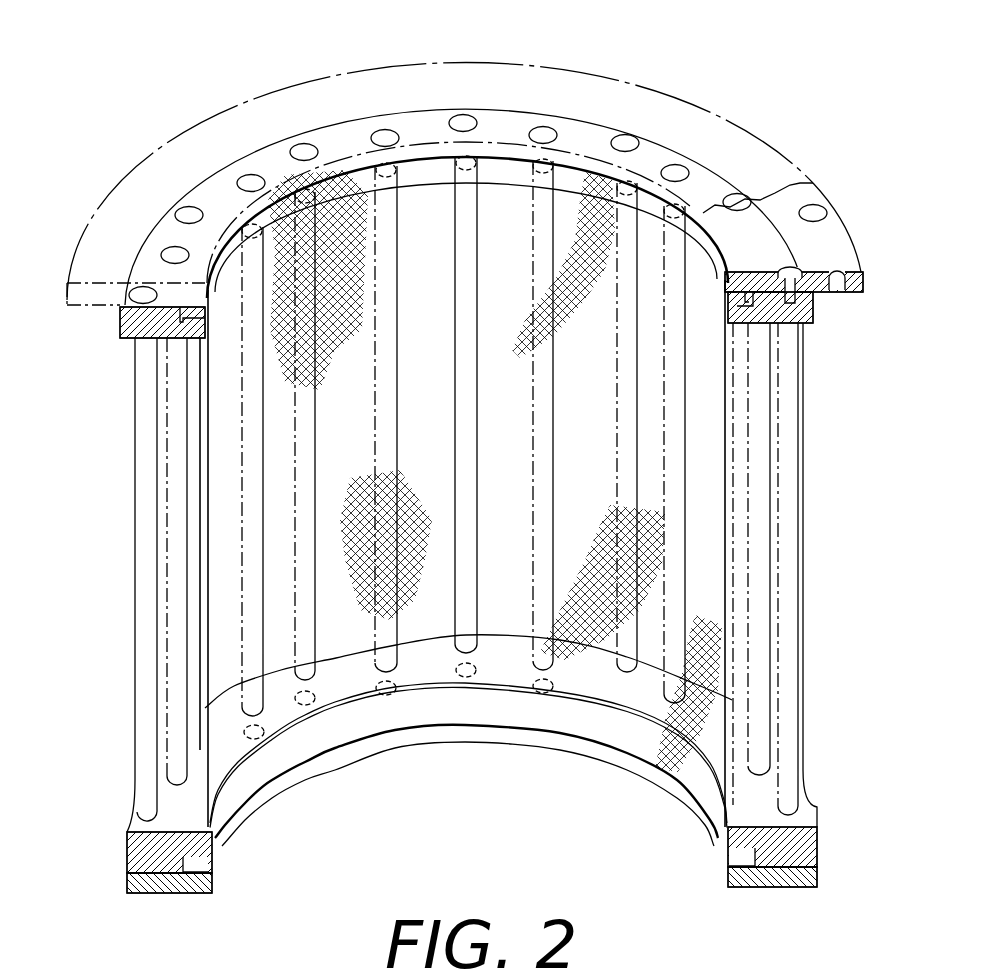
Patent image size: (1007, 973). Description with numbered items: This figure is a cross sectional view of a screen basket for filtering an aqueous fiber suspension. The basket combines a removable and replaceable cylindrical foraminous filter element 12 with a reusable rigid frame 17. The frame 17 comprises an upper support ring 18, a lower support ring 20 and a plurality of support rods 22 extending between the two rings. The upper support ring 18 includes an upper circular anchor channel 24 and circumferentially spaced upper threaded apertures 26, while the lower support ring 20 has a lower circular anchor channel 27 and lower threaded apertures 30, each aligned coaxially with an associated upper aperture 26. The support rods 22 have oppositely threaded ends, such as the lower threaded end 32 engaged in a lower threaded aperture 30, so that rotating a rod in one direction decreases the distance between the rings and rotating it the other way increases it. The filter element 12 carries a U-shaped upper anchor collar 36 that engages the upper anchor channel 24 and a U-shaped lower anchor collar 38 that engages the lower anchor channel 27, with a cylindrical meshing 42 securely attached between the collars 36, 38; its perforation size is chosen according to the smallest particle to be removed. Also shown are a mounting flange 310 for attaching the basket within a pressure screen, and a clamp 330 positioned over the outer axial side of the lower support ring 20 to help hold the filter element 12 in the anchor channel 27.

The cylindrical foraminous filter element 12 is at (585, 245).
The rigid frame 17 is at (487, 95).
The upper support ring 18 is at (218, 187).
The lower support ring 20 is at (335, 745).
The support rods 22 is at (137, 412).
The upper circular anchor channel 24 is at (128, 330).
The upper threaded apertures 26 is at (397, 173).
The lower circular anchor channel 27 is at (182, 893).
The lower threaded apertures 30 is at (318, 685).
The threaded end 32 is at (143, 821).
The upper anchor collar 36 is at (187, 300).
The lower anchor collar 38 is at (217, 842).
The cylindrical meshing 42 is at (412, 538).
The mounting flange 310 is at (823, 242).
The clamp 330 is at (140, 893).